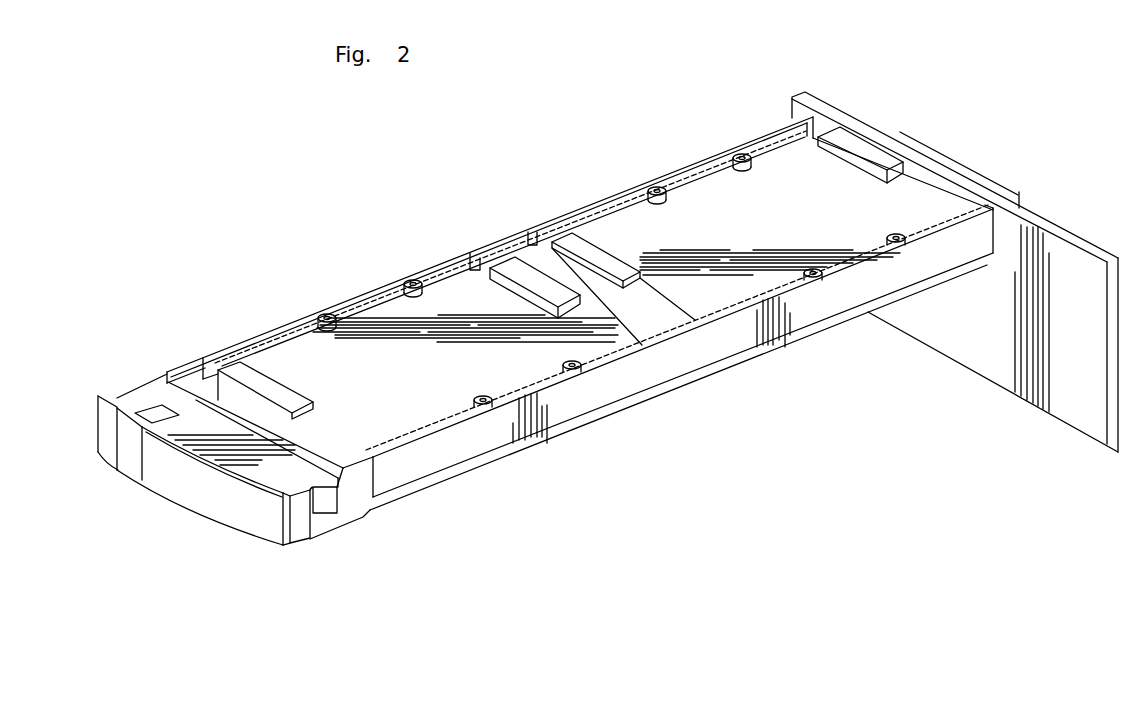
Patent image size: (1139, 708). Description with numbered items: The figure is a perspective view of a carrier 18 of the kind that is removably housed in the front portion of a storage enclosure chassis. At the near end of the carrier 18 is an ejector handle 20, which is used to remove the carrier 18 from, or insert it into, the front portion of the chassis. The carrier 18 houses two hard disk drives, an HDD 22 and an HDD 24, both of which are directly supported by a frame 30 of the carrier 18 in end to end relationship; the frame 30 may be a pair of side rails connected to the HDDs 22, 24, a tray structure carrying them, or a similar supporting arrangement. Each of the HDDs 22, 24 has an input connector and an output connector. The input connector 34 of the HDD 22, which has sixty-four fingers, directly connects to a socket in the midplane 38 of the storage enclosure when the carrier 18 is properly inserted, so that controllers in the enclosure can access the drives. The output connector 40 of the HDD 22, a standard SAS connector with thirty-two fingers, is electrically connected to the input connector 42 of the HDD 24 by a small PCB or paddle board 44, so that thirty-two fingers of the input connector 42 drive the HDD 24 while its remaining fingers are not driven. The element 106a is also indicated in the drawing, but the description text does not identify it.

The carrier 18 is at (257, 264).
The ejector handle 20 is at (233, 548).
The hard disk drive 22 is at (757, 240).
The hard disk drive 24 is at (420, 369).
The frame 30 is at (463, 488).
The input connector 34 is at (857, 107).
The midplane 38 is at (1056, 215).
The output connector 40 is at (562, 230).
The input connector 42 is at (485, 254).
The paddle board 44 is at (542, 259).
The pad 106a is at (227, 354).